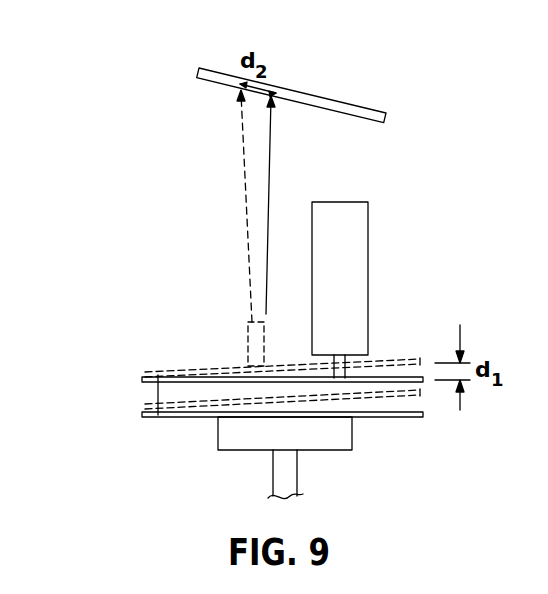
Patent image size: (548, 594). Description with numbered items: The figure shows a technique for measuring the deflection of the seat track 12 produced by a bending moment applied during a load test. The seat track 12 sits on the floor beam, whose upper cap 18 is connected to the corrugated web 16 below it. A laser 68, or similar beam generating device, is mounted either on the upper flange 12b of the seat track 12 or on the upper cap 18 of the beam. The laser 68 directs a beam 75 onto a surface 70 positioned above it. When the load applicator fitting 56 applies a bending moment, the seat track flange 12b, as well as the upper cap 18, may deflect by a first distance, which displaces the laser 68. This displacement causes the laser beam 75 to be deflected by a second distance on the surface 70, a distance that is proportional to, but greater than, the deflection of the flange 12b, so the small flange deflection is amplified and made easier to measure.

The seat track 12 is at (143, 397).
The upper flange 12b is at (404, 405).
The corrugated web 16 is at (288, 472).
The upper cap 18 is at (236, 431).
The load applicator fitting 56 is at (352, 251).
The laser 68 is at (249, 338).
The surface 70 is at (361, 111).
The beam 75 is at (243, 148).